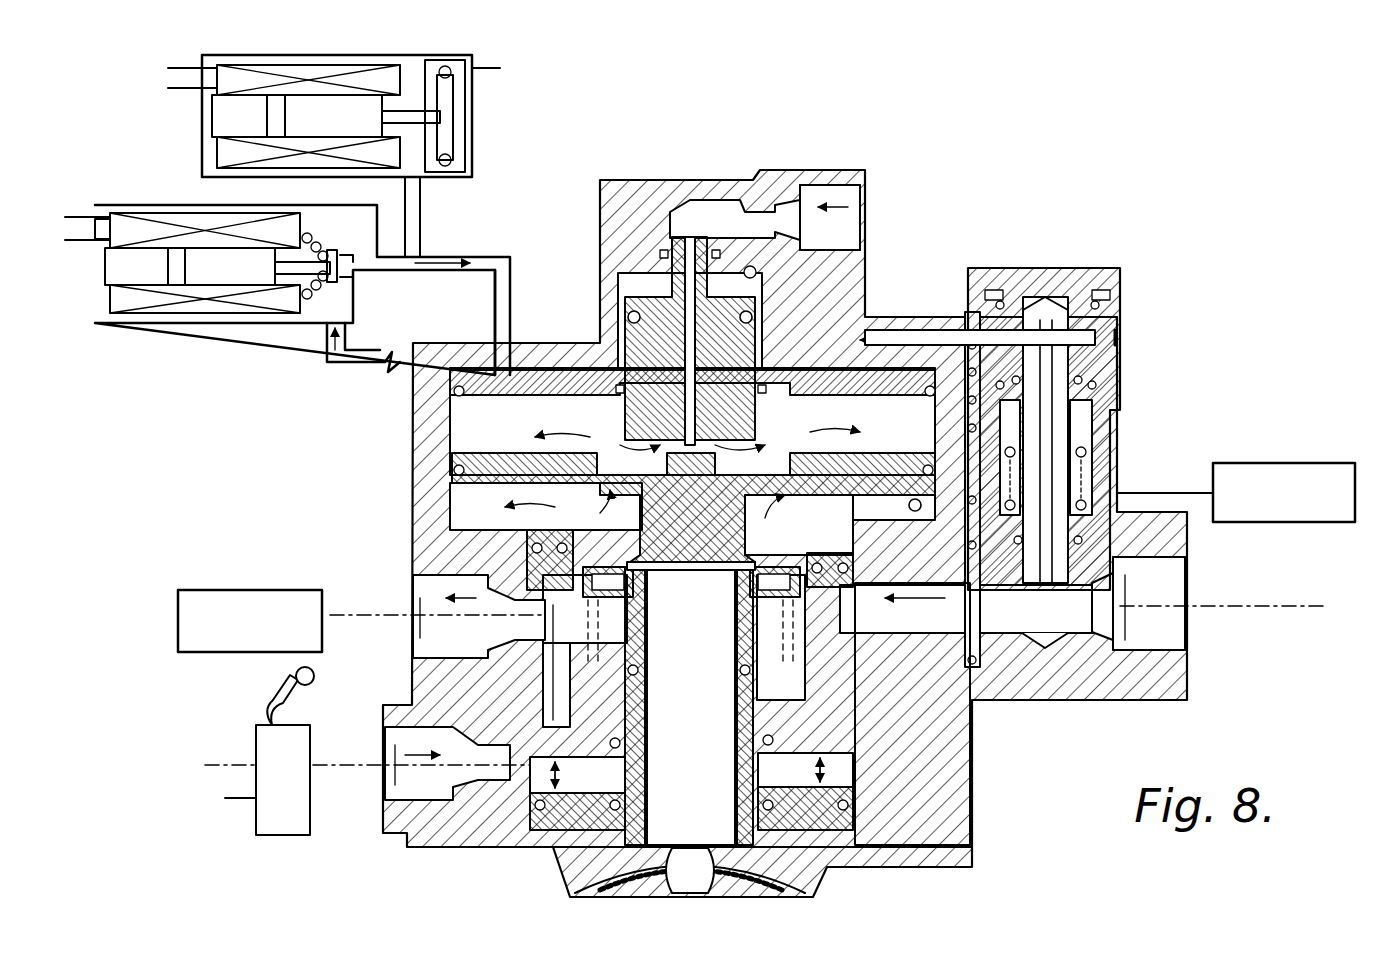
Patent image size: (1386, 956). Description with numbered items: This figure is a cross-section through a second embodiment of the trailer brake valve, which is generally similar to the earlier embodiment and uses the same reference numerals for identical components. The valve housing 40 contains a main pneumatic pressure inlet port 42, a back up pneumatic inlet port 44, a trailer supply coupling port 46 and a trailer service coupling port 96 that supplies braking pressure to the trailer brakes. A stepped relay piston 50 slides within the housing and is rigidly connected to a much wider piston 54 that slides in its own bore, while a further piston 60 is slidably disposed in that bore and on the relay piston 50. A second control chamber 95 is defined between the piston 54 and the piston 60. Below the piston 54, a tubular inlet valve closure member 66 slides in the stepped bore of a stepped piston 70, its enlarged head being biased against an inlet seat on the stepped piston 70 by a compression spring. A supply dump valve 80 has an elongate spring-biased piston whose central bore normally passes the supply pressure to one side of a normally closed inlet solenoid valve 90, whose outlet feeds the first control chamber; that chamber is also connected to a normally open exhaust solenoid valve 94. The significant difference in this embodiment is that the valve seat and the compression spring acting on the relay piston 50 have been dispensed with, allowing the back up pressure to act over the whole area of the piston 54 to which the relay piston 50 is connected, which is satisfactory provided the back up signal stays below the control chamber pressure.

The valve housing 40 is at (766, 533).
The main pneumatic pressure inlet port 42 is at (1192, 623).
The back up pneumatic inlet port 44 is at (866, 205).
The trailer supply coupling port 46 is at (408, 630).
The stepped relay piston 50 is at (732, 362).
The piston 54 is at (676, 525).
The further piston 60 is at (577, 388).
The tubular inlet valve closure member 66 is at (648, 635).
The stepped piston 70 is at (853, 695).
The supply dump valve 80 is at (1125, 392).
The inlet solenoid valve 90 is at (245, 325).
The exhaust solenoid valve 94 is at (480, 142).
The second control chamber 95 is at (460, 432).
The trailer service coupling port 96 is at (905, 505).